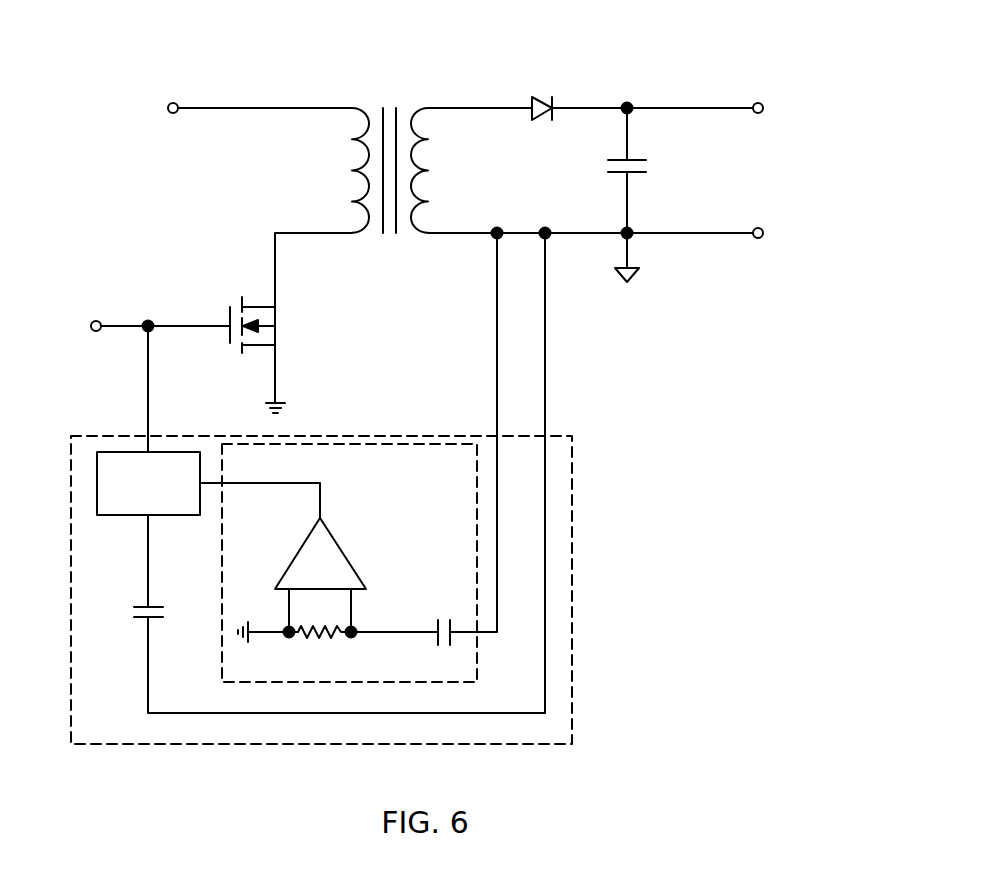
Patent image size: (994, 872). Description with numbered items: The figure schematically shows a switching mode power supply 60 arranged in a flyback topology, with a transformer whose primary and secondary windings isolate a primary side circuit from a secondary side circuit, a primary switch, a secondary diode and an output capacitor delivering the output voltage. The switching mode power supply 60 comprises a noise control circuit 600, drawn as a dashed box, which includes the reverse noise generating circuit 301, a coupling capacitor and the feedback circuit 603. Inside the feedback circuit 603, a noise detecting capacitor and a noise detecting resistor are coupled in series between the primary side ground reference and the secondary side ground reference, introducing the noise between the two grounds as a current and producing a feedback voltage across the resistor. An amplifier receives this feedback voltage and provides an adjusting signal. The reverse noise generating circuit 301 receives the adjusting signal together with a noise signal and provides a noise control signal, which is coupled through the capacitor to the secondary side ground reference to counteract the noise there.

The switching mode power supply 60 is at (735, 42).
The noise control circuit 600 is at (321, 488).
The feedback circuit 603 is at (359, 457).
The reverse noise generating circuit 301 is at (148, 483).